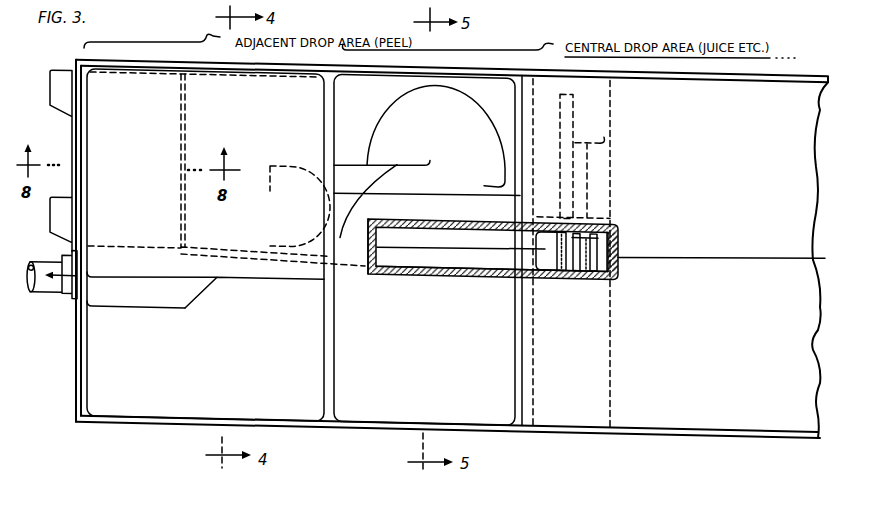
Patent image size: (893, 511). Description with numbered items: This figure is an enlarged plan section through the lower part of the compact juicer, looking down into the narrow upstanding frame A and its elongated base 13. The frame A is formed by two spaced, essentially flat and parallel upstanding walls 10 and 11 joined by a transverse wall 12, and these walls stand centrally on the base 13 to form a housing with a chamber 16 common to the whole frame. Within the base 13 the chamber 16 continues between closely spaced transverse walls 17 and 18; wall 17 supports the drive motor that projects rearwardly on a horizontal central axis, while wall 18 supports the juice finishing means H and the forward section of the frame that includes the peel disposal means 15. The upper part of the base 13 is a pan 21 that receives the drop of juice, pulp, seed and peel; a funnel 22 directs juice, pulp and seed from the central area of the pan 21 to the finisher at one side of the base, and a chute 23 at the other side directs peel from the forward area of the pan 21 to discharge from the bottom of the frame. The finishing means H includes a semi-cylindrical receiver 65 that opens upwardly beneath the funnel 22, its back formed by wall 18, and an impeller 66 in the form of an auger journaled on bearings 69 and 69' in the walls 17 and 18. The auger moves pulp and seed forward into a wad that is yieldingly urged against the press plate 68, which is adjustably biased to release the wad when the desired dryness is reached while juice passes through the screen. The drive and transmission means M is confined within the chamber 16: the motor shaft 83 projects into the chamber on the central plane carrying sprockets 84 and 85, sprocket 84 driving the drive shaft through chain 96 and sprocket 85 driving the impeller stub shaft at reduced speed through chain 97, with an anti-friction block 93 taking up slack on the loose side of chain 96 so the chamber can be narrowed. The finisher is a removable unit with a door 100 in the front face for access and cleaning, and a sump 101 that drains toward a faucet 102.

The wall 10 is at (440, 211).
The wall 11 is at (400, 267).
The transverse wall 12 is at (368, 258).
The base 13 is at (648, 389).
The disposal means 15 is at (121, 384).
The chamber 16 is at (467, 250).
The transverse wall 17 is at (605, 333).
The transverse wall 18 is at (538, 327).
The pan 21 is at (731, 170).
The funnel 22 is at (438, 370).
The chute 23 is at (217, 367).
The receiver 65 is at (514, 85).
The impeller 66 is at (398, 87).
The press plate 68 is at (181, 131).
The bearing 69 is at (601, 176).
The bearing 69' is at (530, 156).
The motor shaft 83 is at (602, 243).
The sprocket 84 is at (601, 246).
The sprocket 85 is at (557, 245).
The anti-friction block 93 is at (620, 222).
The chain 96 is at (590, 258).
The chain 97 is at (575, 258).
The door 100 is at (72, 138).
The sump 101 is at (128, 297).
The faucet 102 is at (33, 291).
The frame A is at (168, 419).
The juice finishing means H is at (274, 259).
The drive and transmission means M is at (620, 230).